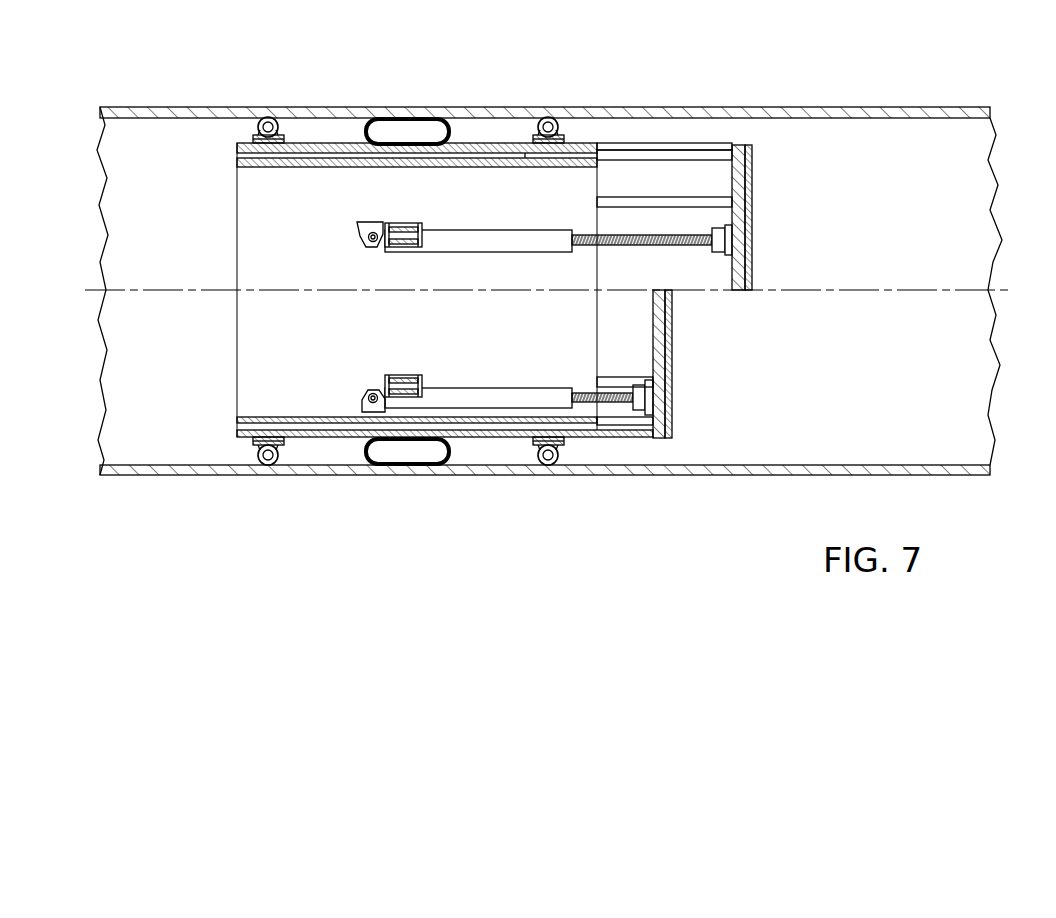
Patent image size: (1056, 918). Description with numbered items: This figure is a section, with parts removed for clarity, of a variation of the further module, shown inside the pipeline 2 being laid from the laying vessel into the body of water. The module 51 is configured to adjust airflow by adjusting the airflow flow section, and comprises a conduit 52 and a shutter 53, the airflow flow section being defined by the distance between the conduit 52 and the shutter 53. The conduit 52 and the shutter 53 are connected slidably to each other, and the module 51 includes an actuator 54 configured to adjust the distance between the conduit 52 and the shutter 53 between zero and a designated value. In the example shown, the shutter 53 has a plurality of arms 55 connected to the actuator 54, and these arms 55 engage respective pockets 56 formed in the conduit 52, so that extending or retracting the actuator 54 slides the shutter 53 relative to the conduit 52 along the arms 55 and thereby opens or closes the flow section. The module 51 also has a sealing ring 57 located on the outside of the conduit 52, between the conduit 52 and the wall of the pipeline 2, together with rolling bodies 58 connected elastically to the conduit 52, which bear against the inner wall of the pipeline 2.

The pipeline 2 is at (196, 111).
The module 51 is at (436, 92).
The conduit 52 is at (492, 138).
The shutter 53 is at (753, 258).
The actuator 54 is at (468, 240).
The arms 55 is at (668, 155).
The pockets 56 is at (318, 166).
The sealing ring 57 is at (356, 118).
The rolling bodies 58 is at (250, 127).